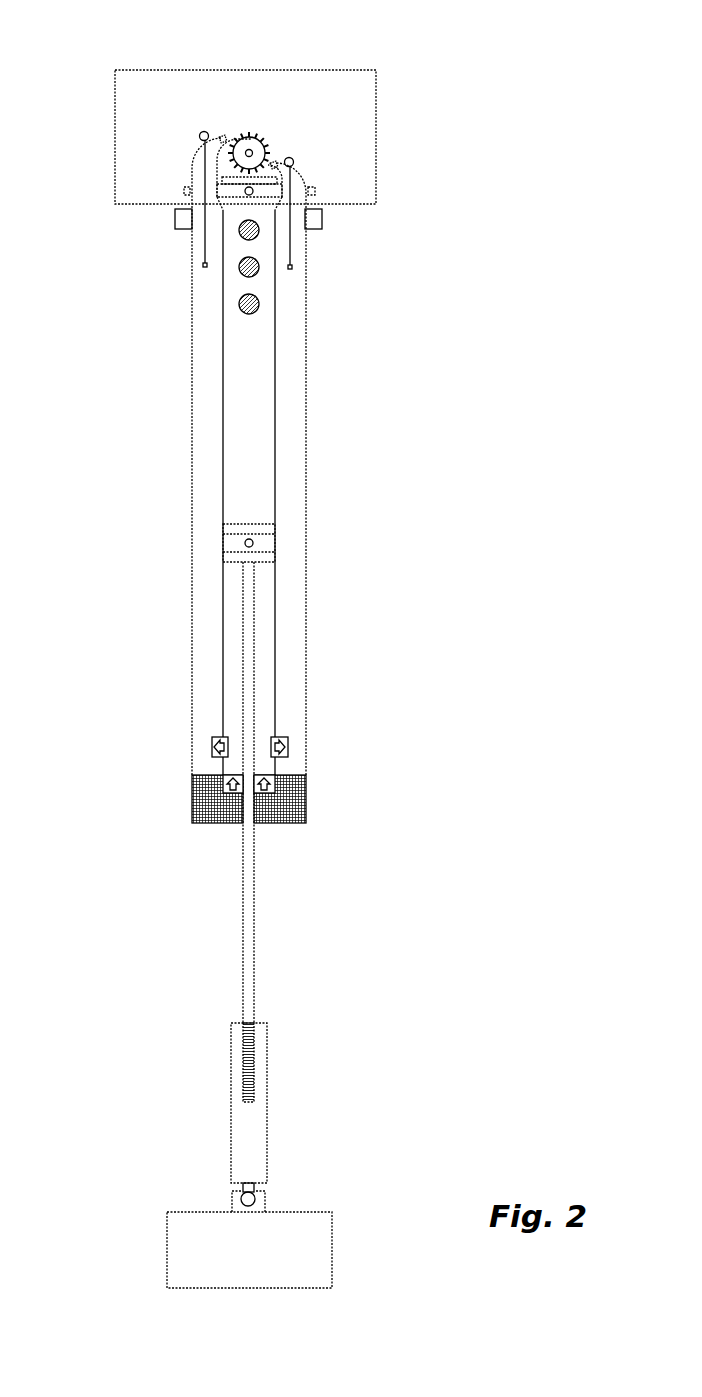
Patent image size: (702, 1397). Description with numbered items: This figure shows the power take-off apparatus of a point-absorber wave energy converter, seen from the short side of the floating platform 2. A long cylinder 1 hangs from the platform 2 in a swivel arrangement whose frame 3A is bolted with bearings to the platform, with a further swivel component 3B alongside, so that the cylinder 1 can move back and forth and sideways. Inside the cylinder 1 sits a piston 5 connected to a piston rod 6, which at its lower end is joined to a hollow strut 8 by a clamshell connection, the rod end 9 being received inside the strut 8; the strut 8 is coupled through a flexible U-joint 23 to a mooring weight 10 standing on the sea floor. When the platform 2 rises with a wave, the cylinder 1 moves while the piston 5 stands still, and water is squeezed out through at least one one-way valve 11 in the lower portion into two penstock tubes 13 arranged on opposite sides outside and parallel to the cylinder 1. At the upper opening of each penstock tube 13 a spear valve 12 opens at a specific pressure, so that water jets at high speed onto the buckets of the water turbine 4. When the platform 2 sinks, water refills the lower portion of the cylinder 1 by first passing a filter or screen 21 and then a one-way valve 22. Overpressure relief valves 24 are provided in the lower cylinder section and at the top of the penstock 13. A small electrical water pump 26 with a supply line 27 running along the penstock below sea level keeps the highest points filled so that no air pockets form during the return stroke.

The cylinder 1 is at (233, 503).
The floating platform 2 is at (133, 117).
The frame 3A is at (239, 194).
The housing mount 3B is at (184, 190).
The water turbine 4 is at (250, 145).
The piston 5 is at (232, 545).
The piston rod 6 is at (248, 669).
The hollow strut 8 is at (233, 1140).
The spring 9 is at (245, 1063).
The mooring weight 10 is at (200, 1246).
The one-way valve 11 is at (212, 752).
The spear valve 12 is at (222, 136).
The penstock tube 13 is at (203, 402).
The filter or screen 21 is at (225, 808).
The one-way valve 22 is at (223, 784).
The flexible U-joint 23 is at (242, 1202).
The overpressure relief valve 24 is at (175, 227).
The electrical water pump 26 is at (204, 131).
The supply line 27 is at (203, 172).